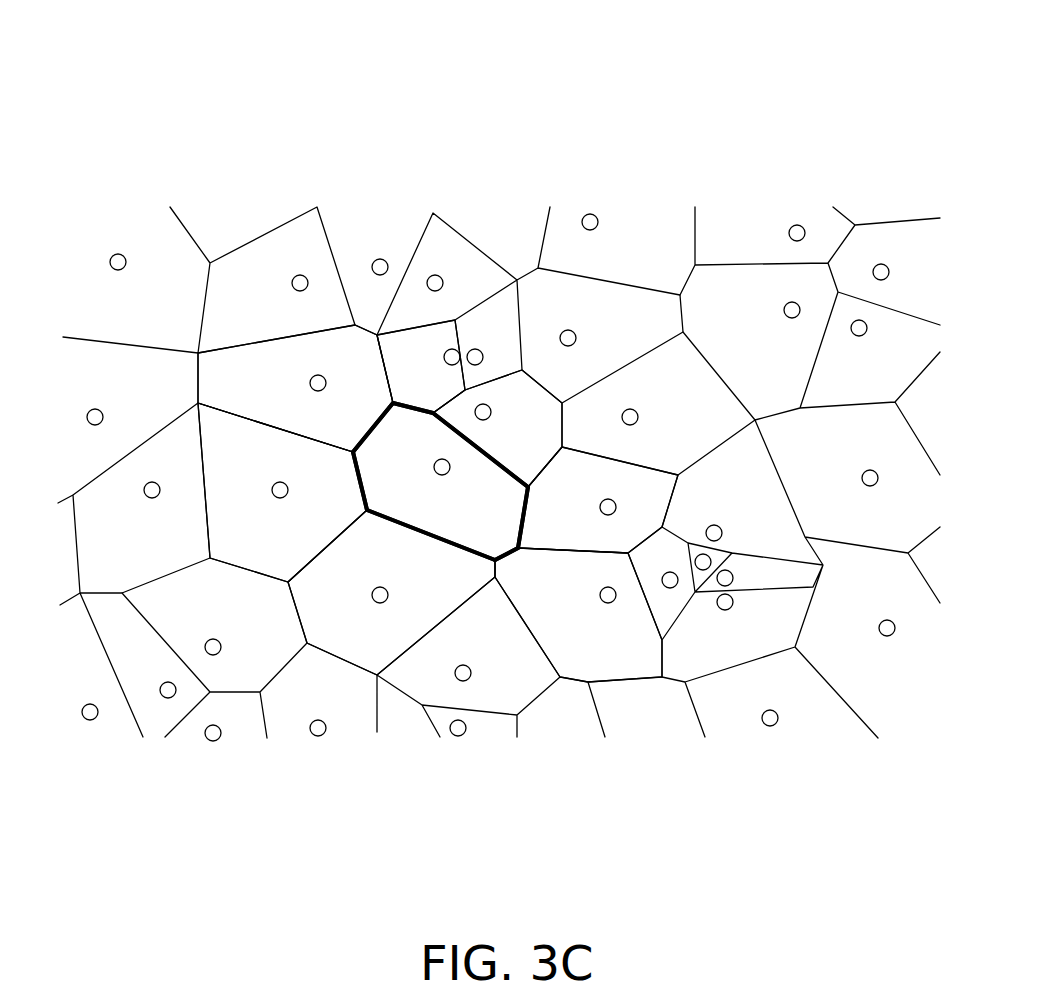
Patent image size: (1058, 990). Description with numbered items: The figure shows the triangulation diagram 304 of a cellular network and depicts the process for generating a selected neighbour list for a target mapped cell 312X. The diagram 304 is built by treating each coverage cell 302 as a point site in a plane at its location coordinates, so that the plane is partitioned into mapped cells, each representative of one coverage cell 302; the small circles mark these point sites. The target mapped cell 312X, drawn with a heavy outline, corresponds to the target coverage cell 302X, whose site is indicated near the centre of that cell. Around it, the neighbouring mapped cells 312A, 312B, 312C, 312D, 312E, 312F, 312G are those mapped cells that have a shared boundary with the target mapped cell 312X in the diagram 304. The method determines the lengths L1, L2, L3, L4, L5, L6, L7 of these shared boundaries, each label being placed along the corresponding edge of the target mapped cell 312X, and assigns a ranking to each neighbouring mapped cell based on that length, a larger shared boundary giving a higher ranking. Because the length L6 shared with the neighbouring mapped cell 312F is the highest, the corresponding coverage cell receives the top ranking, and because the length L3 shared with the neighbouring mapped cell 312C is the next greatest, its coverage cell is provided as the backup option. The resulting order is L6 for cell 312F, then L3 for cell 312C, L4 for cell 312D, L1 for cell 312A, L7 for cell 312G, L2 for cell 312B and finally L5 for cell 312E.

The coverage cell 302 is at (524, 229).
The target coverage cell 302X is at (472, 500).
The triangulation diagram 304 is at (814, 67).
The neighbouring mapped cell 312A is at (304, 397).
The neighbouring mapped cell 312B is at (442, 361).
The neighbouring mapped cell 312C is at (556, 424).
The neighbouring mapped cell 312D is at (634, 494).
The neighbouring mapped cell 312E is at (626, 641).
The neighbouring mapped cell 312F is at (385, 637).
The neighbouring mapped cell 312G is at (300, 531).
The target mapped cell 312X is at (440, 506).
The length of shared boundary L1 is at (370, 423).
The length of shared boundary L2 is at (413, 399).
The length of shared boundary L3 is at (480, 450).
The length of shared boundary L4 is at (538, 517).
The length of shared boundary L5 is at (516, 570).
The length of shared boundary L6 is at (431, 538).
The length of shared boundary L7 is at (343, 481).